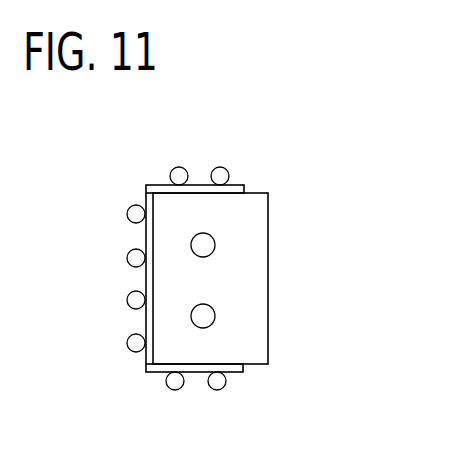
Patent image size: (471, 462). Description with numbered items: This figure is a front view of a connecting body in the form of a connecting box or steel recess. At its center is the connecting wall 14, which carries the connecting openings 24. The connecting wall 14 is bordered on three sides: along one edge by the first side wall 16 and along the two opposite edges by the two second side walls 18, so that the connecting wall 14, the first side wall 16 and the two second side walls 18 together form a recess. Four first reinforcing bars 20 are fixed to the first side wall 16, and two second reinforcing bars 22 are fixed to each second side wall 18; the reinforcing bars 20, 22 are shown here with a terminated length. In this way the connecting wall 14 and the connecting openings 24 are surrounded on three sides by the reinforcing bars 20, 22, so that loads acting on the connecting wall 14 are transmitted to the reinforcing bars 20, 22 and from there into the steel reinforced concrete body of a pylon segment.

The connecting wall 14 is at (254, 291).
The first side wall 16 is at (146, 237).
The second side wall 18 is at (200, 190).
The first reinforcing bar 20 is at (128, 207).
The second reinforcing bar 22 is at (174, 167).
The connecting opening 24 is at (205, 245).